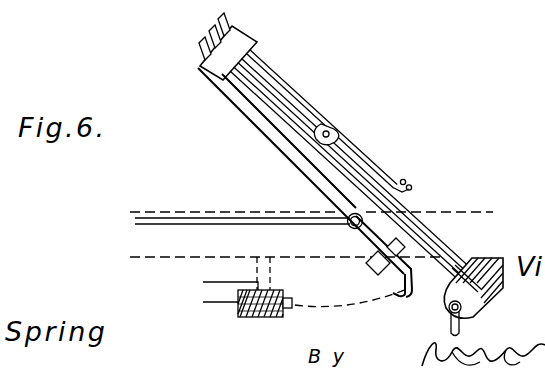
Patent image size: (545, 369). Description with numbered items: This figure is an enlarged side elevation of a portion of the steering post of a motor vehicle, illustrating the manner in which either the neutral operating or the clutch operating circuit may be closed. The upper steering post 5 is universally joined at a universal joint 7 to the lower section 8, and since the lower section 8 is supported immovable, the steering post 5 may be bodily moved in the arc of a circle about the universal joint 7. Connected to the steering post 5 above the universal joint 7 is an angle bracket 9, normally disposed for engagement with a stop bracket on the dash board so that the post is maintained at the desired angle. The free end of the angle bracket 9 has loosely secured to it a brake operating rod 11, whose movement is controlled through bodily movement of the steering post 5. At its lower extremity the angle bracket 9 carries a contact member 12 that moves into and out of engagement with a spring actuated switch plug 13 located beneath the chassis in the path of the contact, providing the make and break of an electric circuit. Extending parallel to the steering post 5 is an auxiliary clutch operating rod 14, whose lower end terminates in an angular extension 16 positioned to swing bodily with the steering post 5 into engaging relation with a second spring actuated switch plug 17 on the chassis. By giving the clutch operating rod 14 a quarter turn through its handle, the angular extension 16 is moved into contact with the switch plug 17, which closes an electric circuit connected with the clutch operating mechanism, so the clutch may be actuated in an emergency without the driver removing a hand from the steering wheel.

The steering post 5 is at (228, 22).
The universal joint 7 is at (330, 122).
The lower section 8 is at (372, 170).
The angle bracket 9 is at (212, 58).
The brake operating rod 11 is at (247, 216).
The contact member 12 is at (408, 294).
The spring actuated switch plug 13 is at (263, 317).
The auxiliary clutch operating rod 14 is at (337, 167).
The angular extension 16 is at (420, 225).
The second spring actuated switch plug 17 is at (390, 252).